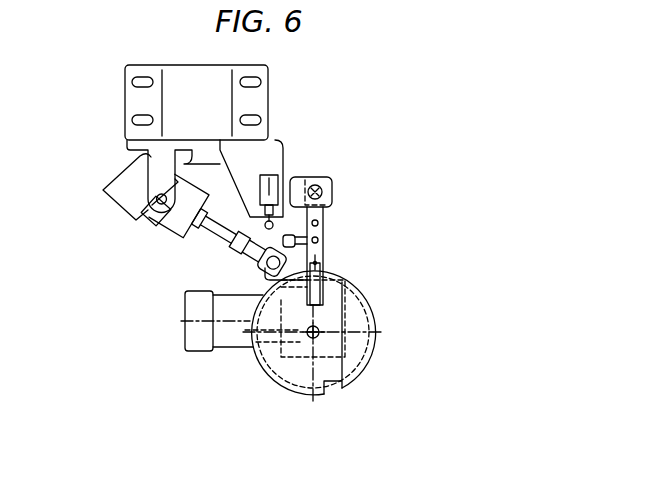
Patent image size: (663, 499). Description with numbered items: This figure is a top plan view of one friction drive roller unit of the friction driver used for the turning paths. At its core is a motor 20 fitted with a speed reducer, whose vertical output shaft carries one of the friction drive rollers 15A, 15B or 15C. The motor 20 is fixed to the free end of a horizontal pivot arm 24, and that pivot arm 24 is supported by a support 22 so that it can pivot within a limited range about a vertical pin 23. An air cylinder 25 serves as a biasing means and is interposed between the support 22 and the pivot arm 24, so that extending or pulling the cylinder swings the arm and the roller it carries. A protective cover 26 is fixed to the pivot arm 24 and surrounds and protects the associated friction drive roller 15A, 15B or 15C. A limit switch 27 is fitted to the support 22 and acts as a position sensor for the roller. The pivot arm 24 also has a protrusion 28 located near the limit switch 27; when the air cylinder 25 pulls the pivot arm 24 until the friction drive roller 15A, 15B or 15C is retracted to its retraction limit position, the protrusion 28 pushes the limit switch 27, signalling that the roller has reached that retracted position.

The support 22 is at (175, 98).
The air cylinder 25 is at (128, 197).
The protrusion 28 is at (250, 257).
The limit switch 27 is at (270, 176).
The vertical pin 23 is at (333, 191).
The horizontal pivot arm 24 is at (327, 251).
The motor 20 is at (220, 327).
The protective cover 26 is at (283, 367).
The friction drive roller 15A is at (389, 337).
The friction drive roller 15B is at (389, 337).
The friction drive roller 15C is at (369, 315).